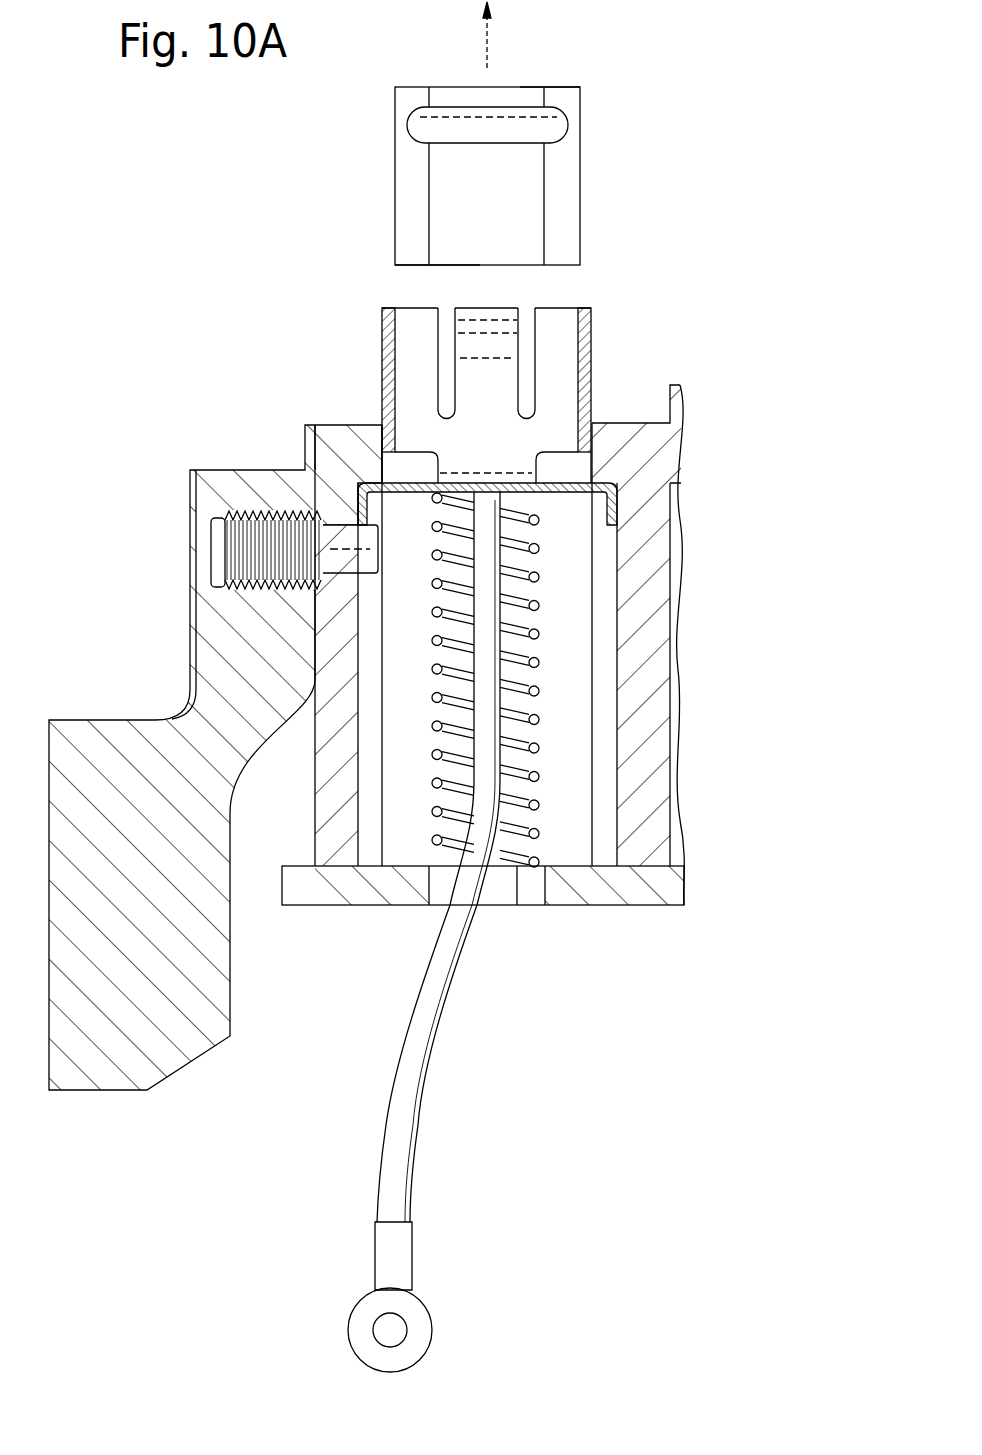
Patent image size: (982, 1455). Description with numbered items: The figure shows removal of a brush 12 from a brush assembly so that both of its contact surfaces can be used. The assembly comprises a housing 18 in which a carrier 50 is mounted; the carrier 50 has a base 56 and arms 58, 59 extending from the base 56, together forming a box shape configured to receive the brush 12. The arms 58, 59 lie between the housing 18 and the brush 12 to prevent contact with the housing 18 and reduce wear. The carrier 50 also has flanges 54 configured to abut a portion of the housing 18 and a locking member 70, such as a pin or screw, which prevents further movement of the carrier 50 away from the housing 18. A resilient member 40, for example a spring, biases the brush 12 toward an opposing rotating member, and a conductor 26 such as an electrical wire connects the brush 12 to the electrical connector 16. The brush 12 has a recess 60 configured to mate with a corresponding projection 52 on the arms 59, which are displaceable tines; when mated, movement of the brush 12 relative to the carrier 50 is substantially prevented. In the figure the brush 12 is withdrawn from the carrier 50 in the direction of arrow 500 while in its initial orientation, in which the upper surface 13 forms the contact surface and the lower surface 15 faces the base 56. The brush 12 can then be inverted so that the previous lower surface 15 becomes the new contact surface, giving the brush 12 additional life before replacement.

The arrow 500 is at (488, 50).
The upper surface 13 is at (550, 88).
The recess 60 is at (418, 128).
The brush 12 is at (562, 163).
The lower surface 15 is at (458, 265).
The projection 52 is at (507, 340).
The arm 58 is at (388, 378).
The arm 59 is at (500, 372).
The carrier 50 is at (592, 363).
The flange 54 is at (357, 510).
The locking member 70 is at (230, 527).
The base 56 is at (563, 505).
The housing 18 is at (655, 707).
The resilient member 40 is at (540, 803).
The conductor 26 is at (399, 1136).
The electrical connector 16 is at (420, 1327).